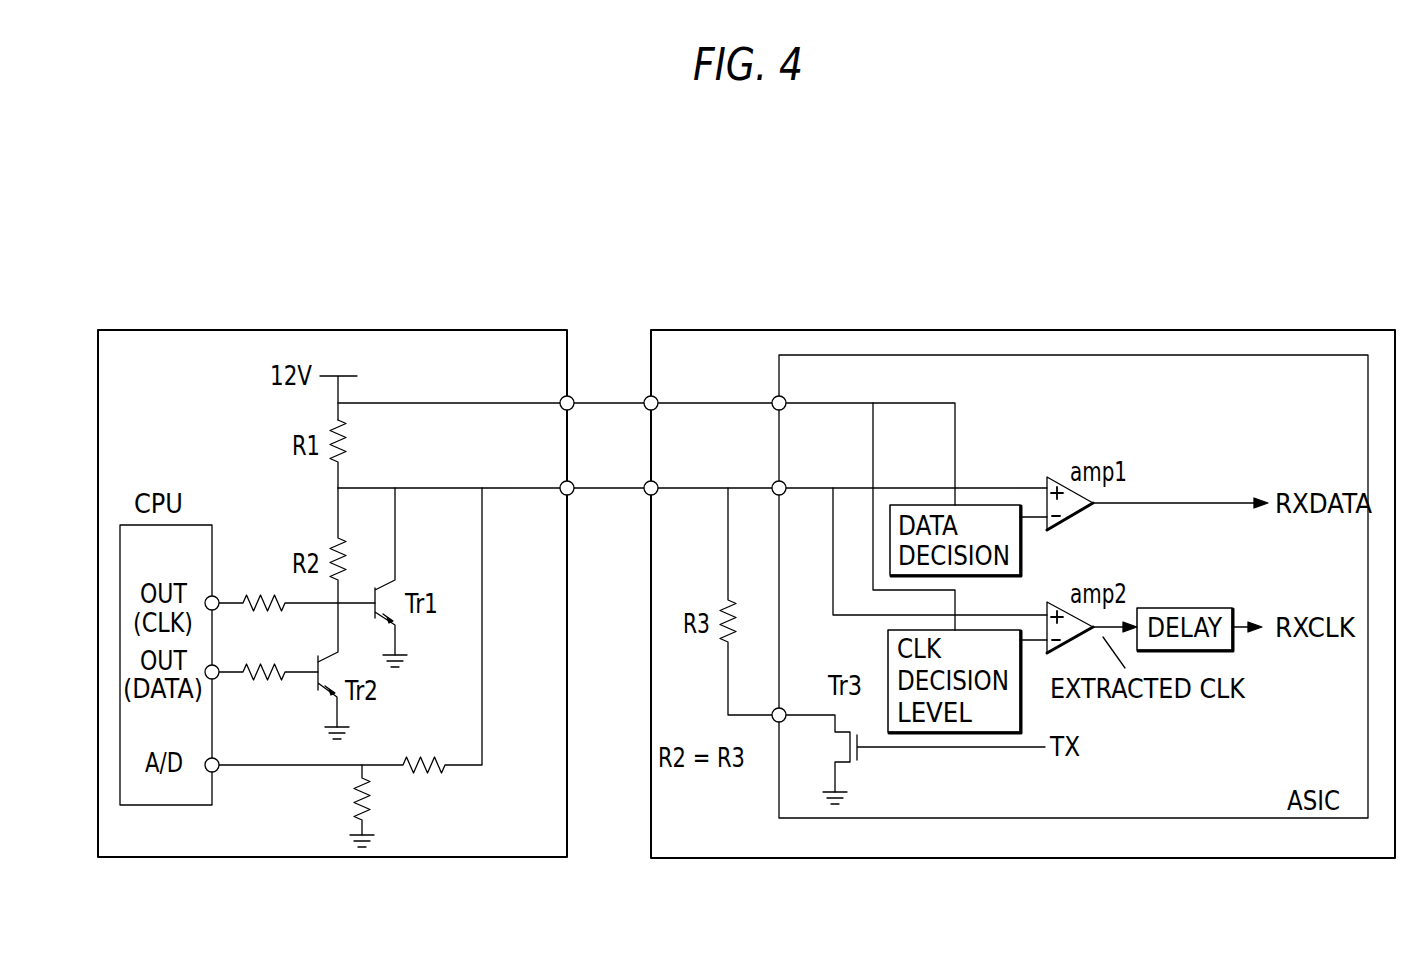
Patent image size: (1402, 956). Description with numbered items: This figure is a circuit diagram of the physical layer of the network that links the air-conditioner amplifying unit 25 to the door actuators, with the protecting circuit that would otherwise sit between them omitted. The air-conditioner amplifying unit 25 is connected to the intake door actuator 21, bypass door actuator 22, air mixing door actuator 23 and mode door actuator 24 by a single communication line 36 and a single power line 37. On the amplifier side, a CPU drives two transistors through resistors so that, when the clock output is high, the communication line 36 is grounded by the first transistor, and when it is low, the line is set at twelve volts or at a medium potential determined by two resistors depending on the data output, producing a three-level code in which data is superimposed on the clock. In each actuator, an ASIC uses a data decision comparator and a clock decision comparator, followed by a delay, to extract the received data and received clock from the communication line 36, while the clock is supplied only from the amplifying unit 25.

The air-conditioner amplifying unit 25 is at (344, 329).
The power line 37 is at (607, 403).
The communication line 36 is at (605, 489).
The intake door actuator 21 is at (1023, 568).
The bypass door actuator 22 is at (1023, 594).
The air mixing door actuator 23 is at (1023, 594).
The mode door actuator 24 is at (796, 330).